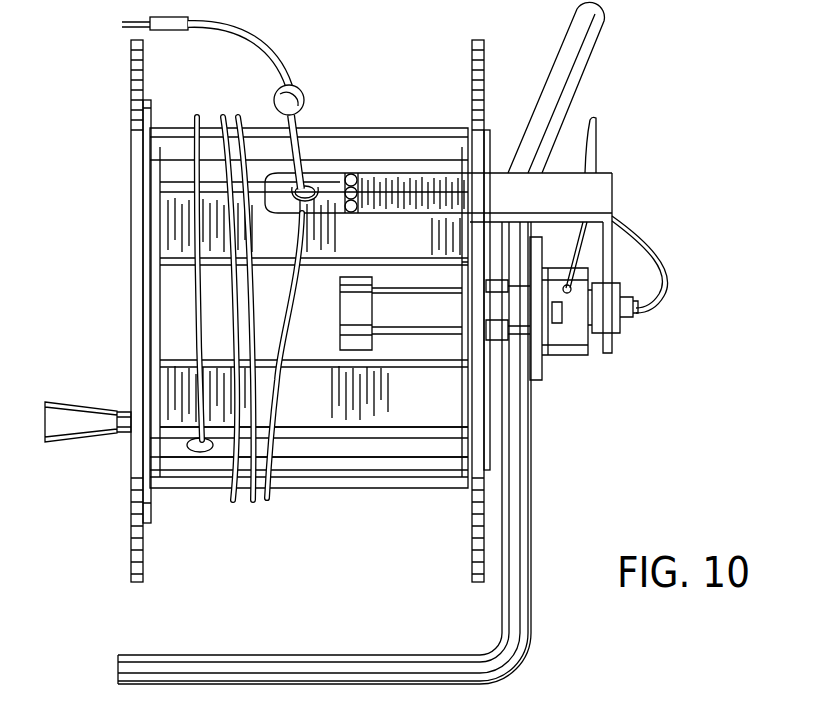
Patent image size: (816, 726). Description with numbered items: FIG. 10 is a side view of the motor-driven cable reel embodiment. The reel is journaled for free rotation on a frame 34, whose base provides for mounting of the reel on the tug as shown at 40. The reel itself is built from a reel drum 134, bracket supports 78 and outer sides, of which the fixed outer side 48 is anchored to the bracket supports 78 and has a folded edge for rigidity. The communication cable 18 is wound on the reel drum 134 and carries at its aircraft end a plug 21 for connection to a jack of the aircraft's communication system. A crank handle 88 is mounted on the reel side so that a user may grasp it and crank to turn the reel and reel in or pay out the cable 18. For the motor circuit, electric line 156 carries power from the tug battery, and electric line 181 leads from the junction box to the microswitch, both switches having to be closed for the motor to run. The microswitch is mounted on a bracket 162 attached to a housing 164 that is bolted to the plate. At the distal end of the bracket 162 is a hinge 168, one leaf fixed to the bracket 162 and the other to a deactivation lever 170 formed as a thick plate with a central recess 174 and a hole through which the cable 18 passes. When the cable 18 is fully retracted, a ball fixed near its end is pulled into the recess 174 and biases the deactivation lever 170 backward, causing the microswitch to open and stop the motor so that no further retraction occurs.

The communication cable 18 is at (304, 118).
The plug 21 is at (180, 30).
The frame 34 is at (355, 658).
The mounting of the reel on the tug 40 is at (132, 291).
The outer side 48 is at (472, 519).
The bracket supports 78 is at (356, 487).
The crank handle 88 is at (89, 408).
The reel drum 134 is at (333, 446).
The electric line 156 is at (590, 143).
The bracket 162 is at (598, 196).
The housing 164 is at (567, 348).
The hinge 168 is at (357, 190).
The deactivation lever 170 is at (327, 205).
The central recess 174 is at (311, 187).
The electric line 181 is at (670, 284).